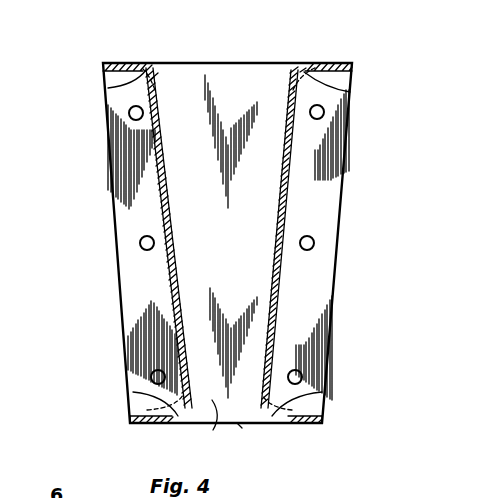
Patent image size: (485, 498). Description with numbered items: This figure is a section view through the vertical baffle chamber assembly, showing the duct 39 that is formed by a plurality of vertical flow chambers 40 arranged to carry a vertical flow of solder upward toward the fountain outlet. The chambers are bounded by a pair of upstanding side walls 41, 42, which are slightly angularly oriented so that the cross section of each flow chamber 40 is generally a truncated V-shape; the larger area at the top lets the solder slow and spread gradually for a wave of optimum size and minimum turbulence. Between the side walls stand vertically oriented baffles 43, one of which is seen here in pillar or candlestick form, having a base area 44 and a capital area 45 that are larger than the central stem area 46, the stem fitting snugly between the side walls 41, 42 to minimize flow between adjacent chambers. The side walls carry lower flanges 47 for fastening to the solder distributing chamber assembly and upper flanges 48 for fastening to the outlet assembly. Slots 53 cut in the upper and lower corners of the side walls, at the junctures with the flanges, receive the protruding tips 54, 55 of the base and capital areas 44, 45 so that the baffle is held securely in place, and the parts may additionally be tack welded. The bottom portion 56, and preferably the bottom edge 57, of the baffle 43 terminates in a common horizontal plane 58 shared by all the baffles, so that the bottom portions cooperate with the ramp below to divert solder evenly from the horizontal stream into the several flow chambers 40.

The duct 39 is at (262, 210).
The vertical flow chamber 40 is at (219, 240).
The side wall 41 is at (282, 270).
The side wall 42 is at (185, 201).
The baffle 43 is at (202, 270).
The base area 44 is at (190, 423).
The capital area 45 is at (232, 88).
The stem area 46 is at (193, 163).
The lower flange 47 is at (132, 420).
The upper flange 48 is at (115, 63).
The slot 53 is at (108, 88).
The protruding tip 54 is at (133, 392).
The protruding tip 55 is at (150, 80).
The bottom portion 56 is at (210, 428).
The bottom edge 57 is at (238, 424).
The common plane 58 is at (262, 428).